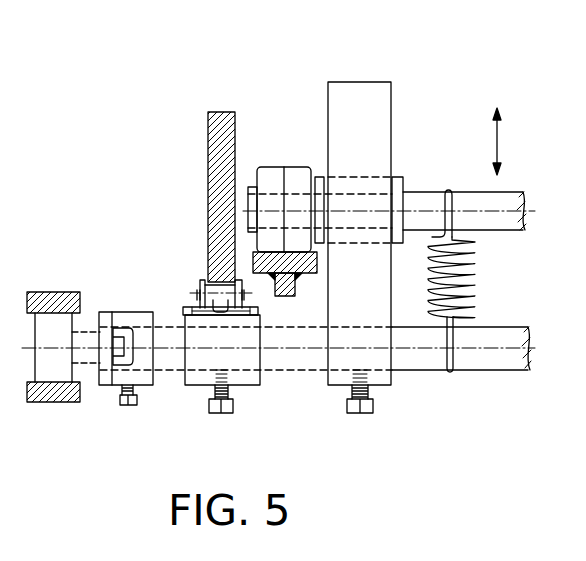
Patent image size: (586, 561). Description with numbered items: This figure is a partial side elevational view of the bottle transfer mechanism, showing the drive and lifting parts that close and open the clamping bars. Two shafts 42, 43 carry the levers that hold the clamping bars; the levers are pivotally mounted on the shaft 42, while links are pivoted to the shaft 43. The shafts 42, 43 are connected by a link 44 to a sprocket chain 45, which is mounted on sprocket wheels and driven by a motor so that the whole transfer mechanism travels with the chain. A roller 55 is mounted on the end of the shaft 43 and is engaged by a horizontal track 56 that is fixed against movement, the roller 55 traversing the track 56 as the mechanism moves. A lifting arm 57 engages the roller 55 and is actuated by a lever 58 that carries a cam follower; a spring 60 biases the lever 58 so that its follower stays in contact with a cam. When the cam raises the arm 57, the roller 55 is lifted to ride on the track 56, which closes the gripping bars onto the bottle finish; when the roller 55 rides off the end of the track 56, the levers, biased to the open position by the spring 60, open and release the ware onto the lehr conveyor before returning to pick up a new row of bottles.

The shaft 42 is at (470, 370).
The shaft 43 is at (490, 230).
The link 44 is at (236, 385).
The sprocket chain 45 is at (197, 285).
The roller 55 is at (305, 167).
The horizontal track 56 is at (281, 297).
The lifting arm 57 is at (143, 312).
The lever 58 is at (388, 142).
The spring 60 is at (473, 277).